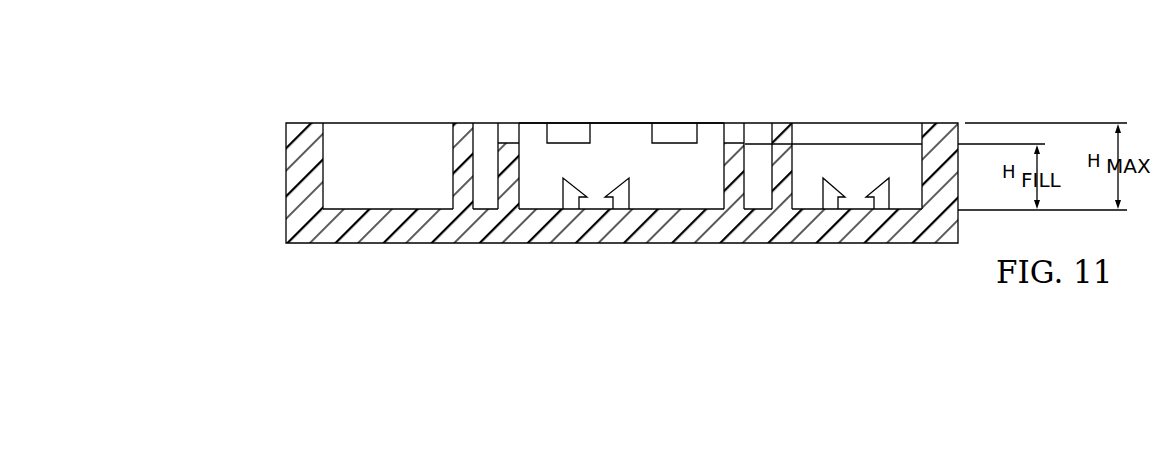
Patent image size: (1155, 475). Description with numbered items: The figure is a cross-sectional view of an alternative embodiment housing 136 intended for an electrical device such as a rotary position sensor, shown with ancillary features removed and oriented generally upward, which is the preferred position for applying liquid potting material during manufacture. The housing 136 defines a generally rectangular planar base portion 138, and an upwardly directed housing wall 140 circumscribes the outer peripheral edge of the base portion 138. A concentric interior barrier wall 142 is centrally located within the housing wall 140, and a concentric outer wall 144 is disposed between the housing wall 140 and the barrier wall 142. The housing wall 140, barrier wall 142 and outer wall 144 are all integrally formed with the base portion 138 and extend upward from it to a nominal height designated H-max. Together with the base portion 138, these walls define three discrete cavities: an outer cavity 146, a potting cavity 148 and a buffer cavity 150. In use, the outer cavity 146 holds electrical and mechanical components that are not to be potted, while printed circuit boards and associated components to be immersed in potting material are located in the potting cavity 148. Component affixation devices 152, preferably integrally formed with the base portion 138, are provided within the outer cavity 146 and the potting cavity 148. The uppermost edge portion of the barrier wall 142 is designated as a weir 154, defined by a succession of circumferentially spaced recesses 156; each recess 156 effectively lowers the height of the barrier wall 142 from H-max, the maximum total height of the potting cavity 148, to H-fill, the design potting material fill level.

The housing 136 is at (256, 117).
The base portion 138 is at (323, 276).
The housing wall 140 is at (293, 170).
The barrier wall 142 is at (519, 182).
The outer wall 144 is at (792, 168).
The outer cavity 146 is at (350, 130).
The potting cavity 148 is at (617, 172).
The buffer cavity 150 is at (483, 170).
The component affixation devices 152 is at (607, 202).
The weir 154 is at (598, 100).
The recesses 156 is at (510, 127).